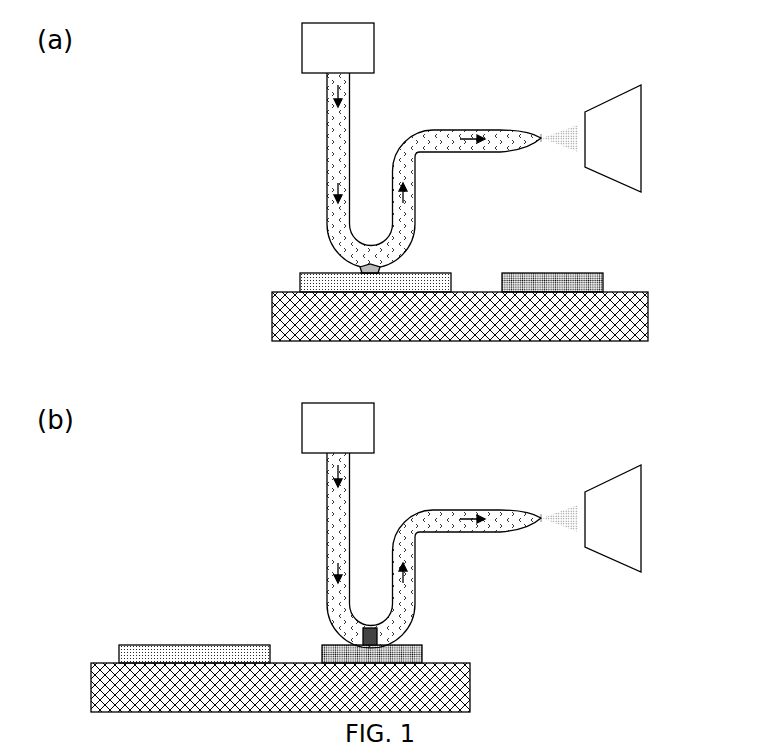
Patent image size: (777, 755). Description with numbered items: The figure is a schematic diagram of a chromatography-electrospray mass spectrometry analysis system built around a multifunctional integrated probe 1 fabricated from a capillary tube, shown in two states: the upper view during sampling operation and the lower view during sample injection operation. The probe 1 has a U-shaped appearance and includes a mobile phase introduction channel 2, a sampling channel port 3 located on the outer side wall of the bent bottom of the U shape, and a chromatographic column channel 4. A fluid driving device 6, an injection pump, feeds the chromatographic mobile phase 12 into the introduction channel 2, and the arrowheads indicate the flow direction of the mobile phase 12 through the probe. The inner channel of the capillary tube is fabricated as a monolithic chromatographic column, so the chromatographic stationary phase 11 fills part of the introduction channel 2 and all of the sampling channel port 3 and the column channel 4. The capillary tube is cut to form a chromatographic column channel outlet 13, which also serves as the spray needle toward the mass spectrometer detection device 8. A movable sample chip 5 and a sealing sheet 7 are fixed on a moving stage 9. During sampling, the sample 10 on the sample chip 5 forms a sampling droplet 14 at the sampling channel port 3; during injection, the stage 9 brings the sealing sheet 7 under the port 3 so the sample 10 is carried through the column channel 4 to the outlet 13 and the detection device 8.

The multifunctional integrated probe 1 is at (326, 170).
The mobile phase introduction channel 2 is at (327, 127).
The sampling channel port 3 is at (358, 265).
The chromatographic column channel 4 is at (412, 227).
The sample chip 5 is at (318, 283).
The fluid driving device 6 is at (318, 51).
The sealing sheet 7 is at (605, 282).
The detection device 8 is at (603, 140).
The moving stage 9 is at (315, 315).
The sample 10 is at (380, 269).
The chromatographic stationary phase 11 is at (420, 160).
The chromatographic mobile phase 12 is at (567, 150).
The chromatographic column channel outlet 13 is at (541, 143).
The sampling droplet 14 is at (358, 268).